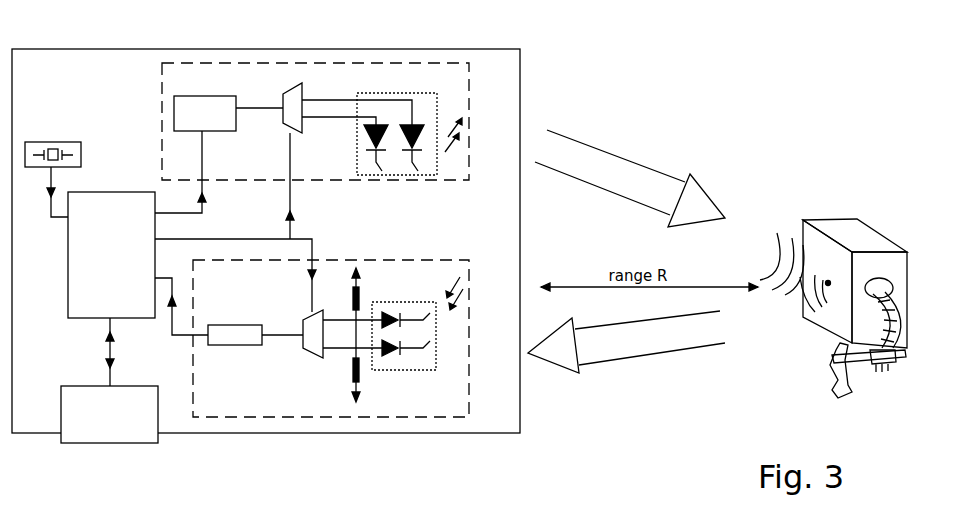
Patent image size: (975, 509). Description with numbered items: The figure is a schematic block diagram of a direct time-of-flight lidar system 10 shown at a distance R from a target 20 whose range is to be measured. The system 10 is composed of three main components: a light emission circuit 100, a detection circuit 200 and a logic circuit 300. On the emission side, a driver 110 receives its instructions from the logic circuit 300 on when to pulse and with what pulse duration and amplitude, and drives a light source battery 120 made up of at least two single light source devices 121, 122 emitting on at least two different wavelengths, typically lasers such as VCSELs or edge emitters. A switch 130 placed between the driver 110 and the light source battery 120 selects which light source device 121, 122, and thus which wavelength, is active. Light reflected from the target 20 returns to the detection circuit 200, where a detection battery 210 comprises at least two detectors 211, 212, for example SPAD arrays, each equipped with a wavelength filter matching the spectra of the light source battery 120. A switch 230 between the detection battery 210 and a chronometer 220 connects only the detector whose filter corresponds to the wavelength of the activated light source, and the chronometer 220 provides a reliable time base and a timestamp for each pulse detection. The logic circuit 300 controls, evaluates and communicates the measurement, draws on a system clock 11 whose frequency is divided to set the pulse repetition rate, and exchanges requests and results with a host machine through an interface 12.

The time-of-flight system 10 is at (183, 48).
The system clock 11 is at (78, 141).
The interface 12 is at (60, 410).
The target 20 is at (840, 212).
The light emission circuit 100 is at (496, 87).
The driver 110 is at (204, 96).
The light source battery 120 is at (362, 89).
The light source device 121 is at (370, 151).
The light source device 122 is at (420, 151).
The switch 130 is at (282, 125).
The detection circuit 200 is at (496, 284).
The detection battery 210 is at (372, 303).
The detector 211 is at (430, 326).
The detector 212 is at (403, 358).
The chronometer 220 is at (237, 348).
The switch 230 is at (313, 353).
The logic circuit 300 is at (111, 255).